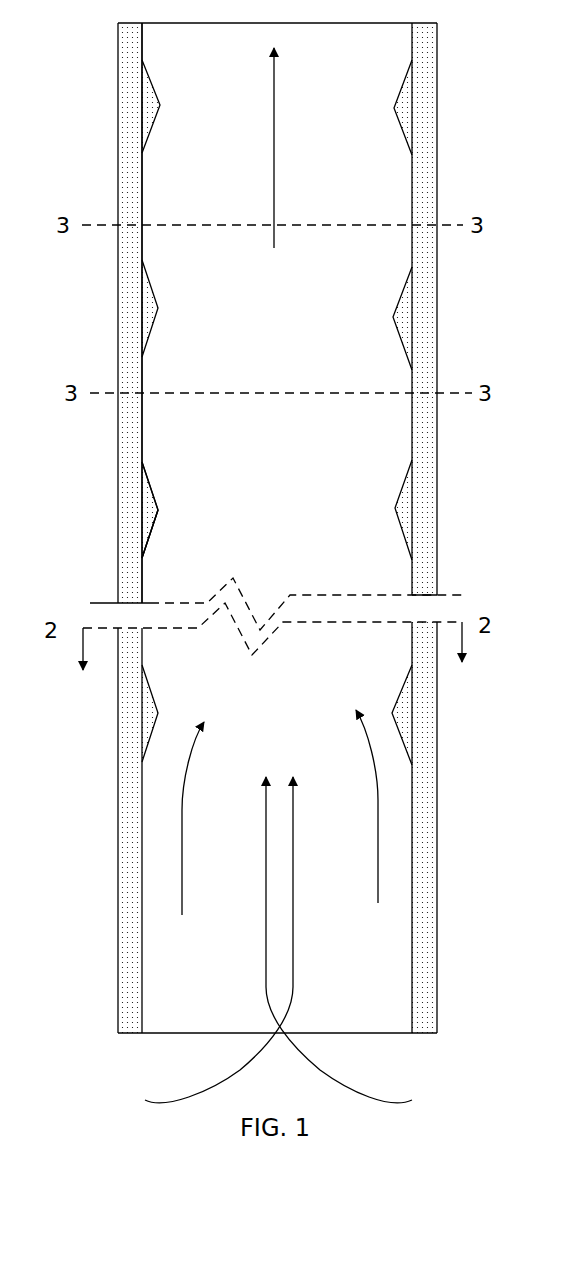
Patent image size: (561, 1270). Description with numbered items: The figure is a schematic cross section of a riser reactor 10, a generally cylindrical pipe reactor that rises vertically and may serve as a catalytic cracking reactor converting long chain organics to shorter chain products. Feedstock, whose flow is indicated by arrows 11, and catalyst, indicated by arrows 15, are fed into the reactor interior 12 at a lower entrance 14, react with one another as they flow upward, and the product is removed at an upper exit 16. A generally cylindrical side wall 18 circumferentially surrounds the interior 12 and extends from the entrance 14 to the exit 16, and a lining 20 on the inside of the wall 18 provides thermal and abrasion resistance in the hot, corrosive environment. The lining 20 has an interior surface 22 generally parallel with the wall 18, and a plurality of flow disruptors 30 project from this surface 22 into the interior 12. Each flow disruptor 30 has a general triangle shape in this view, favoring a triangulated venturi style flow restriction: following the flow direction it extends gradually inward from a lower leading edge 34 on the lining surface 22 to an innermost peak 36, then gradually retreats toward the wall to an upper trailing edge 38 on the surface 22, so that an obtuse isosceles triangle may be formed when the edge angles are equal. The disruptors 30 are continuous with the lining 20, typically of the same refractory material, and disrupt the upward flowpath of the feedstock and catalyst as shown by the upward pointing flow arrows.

The riser reactor 10 is at (54, 190).
The feedstock flow arrow 11 is at (282, 833).
The reactor interior 12 is at (272, 297).
The lower entrance 14 is at (175, 1033).
The catalyst flow arrow 15 is at (283, 945).
The upper exit 16 is at (356, 22).
The side wall 18 is at (437, 191).
The lining 20 is at (128, 84).
The interior surface 22 is at (142, 185).
The flow disruptors 30 is at (154, 106).
The lower leading edge 34 is at (143, 560).
The innermost peak 36 is at (158, 511).
The upper trailing edge 38 is at (143, 462).